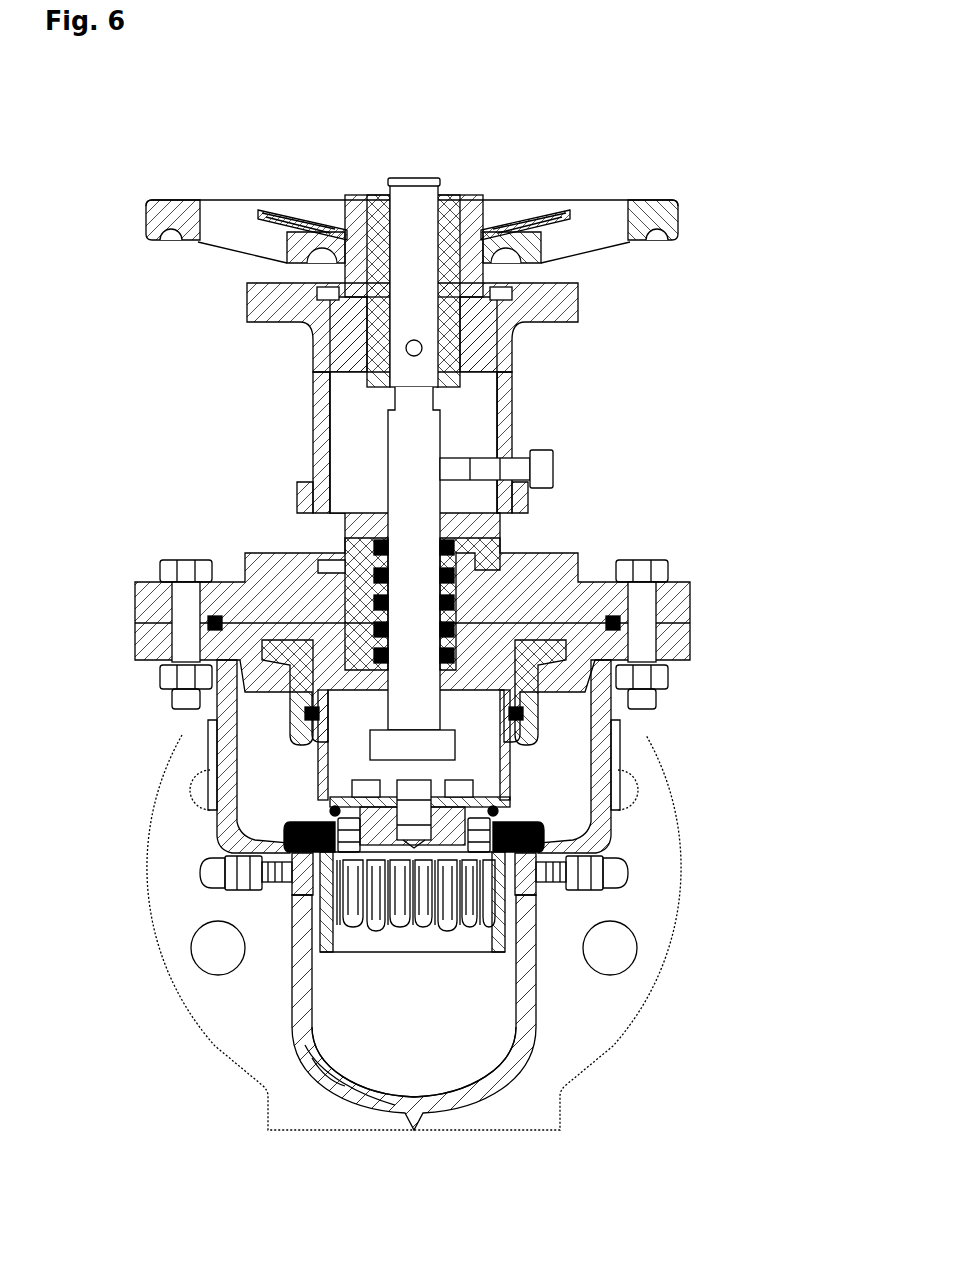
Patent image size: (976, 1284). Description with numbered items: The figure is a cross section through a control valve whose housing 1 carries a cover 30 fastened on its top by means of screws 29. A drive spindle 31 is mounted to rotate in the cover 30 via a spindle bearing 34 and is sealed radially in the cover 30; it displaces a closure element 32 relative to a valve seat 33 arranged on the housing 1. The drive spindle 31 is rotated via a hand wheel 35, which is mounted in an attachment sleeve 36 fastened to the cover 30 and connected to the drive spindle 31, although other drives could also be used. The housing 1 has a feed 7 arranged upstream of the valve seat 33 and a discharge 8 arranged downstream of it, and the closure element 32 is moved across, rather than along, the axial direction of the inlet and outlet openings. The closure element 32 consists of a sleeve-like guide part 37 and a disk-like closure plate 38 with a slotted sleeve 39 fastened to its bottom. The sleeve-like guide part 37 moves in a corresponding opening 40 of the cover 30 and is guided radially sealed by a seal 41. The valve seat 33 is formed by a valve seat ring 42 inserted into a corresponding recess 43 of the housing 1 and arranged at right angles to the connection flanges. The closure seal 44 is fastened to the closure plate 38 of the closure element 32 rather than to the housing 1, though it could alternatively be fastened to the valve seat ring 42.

The housing 1 is at (162, 1000).
The feed 7 is at (265, 791).
The discharge 8 is at (374, 1045).
The screws 29 is at (648, 565).
The cover 30 is at (543, 592).
The drive spindle 31 is at (430, 440).
The closure element 32 is at (520, 792).
The valve seat 33 is at (530, 892).
The spindle bearing 34 is at (380, 568).
The hand wheel 35 is at (600, 214).
The attachment sleeve 36 is at (322, 413).
The sleeve-like guide part 37 is at (326, 768).
The closure plate 38 is at (540, 836).
The slotted sleeve 39 is at (433, 952).
The opening 40 is at (320, 728).
The seal 41 is at (306, 713).
The valve seat ring 42 is at (290, 942).
The recess 43 is at (300, 878).
The closure seal 44 is at (300, 836).